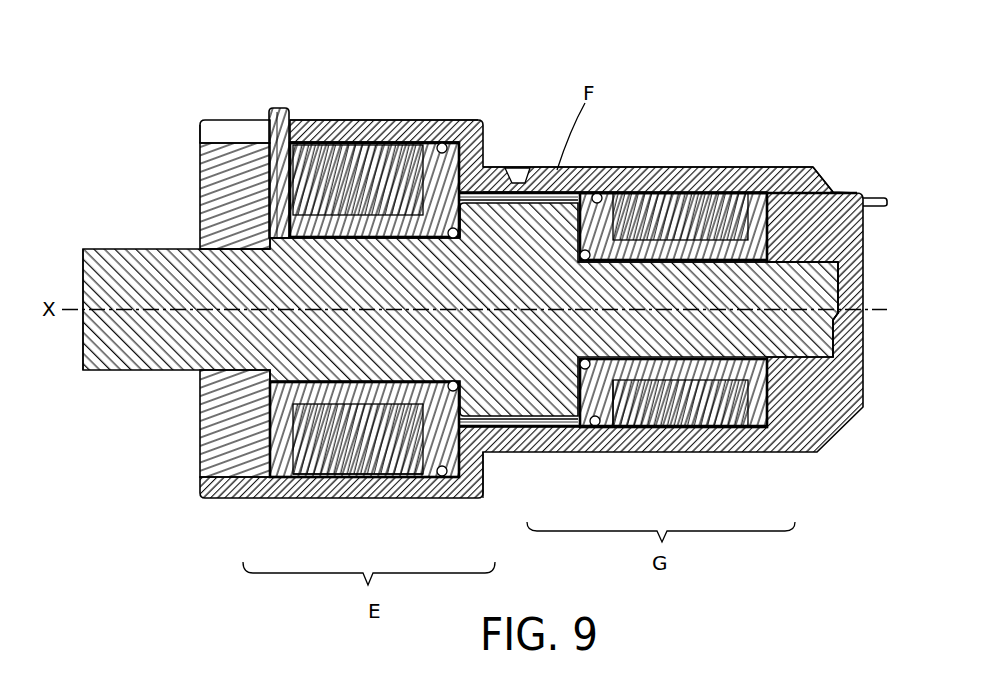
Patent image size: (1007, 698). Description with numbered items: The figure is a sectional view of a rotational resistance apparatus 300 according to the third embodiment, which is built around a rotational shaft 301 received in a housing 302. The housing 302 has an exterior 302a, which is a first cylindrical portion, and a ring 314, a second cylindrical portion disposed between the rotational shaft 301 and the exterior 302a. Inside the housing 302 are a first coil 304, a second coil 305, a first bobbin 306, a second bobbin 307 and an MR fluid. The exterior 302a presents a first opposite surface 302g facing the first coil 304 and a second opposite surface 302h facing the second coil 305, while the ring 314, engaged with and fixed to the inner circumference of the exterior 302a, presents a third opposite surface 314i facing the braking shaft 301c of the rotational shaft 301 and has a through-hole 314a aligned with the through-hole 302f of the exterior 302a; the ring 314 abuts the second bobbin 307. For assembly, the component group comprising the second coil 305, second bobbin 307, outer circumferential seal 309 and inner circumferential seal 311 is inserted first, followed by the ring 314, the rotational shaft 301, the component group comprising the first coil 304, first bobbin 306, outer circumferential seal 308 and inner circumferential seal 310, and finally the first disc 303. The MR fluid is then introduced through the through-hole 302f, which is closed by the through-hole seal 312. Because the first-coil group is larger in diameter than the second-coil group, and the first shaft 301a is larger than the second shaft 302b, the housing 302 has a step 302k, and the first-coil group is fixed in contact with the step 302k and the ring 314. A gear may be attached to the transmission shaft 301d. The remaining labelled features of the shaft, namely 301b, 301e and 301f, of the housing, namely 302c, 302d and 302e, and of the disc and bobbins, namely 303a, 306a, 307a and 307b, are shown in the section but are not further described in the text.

The rotational resistance apparatus 300 is at (197, 492).
The rotational shaft 301 is at (170, 247).
The first shaft 301a is at (352, 233).
The second bearing mounting portion of shaft 301b is at (690, 258).
The braking shaft 301c is at (435, 145).
The transmission shaft 301d is at (82, 250).
The second end of shaft 301e is at (833, 320).
The step of shaft 301f is at (271, 376).
The housing 302 is at (622, 167).
The exterior 302a is at (310, 132).
The second shaft 302b is at (820, 257).
The chamfer of housing 302c is at (835, 190).
The housing end wall 302d is at (204, 127).
The housing flange 302e is at (802, 228).
The through-hole 302f is at (538, 193).
The first opposite surface 302g is at (362, 142).
The second opposite surface 302h is at (723, 185).
The step 302k is at (486, 456).
The first disc 303 is at (213, 172).
The collar end face 303a is at (223, 247).
The first coil 304 is at (302, 445).
The second coil 305 is at (710, 400).
The first bobbin 306 is at (365, 390).
The inner ring end face 306a is at (440, 428).
The second bobbin 307 is at (730, 362).
The inner ring end face 307a is at (608, 395).
The pin 307b is at (277, 117).
The outer circumferential seal 308 is at (443, 468).
The outer circumferential seal 309 is at (594, 424).
The inner circumferential seal 310 is at (455, 386).
The inner circumferential seal 311 is at (586, 366).
The through-hole seal 312 is at (518, 183).
The ring 314 is at (460, 193).
The through-hole 314a is at (478, 200).
The third opposite surface 314i is at (468, 200).